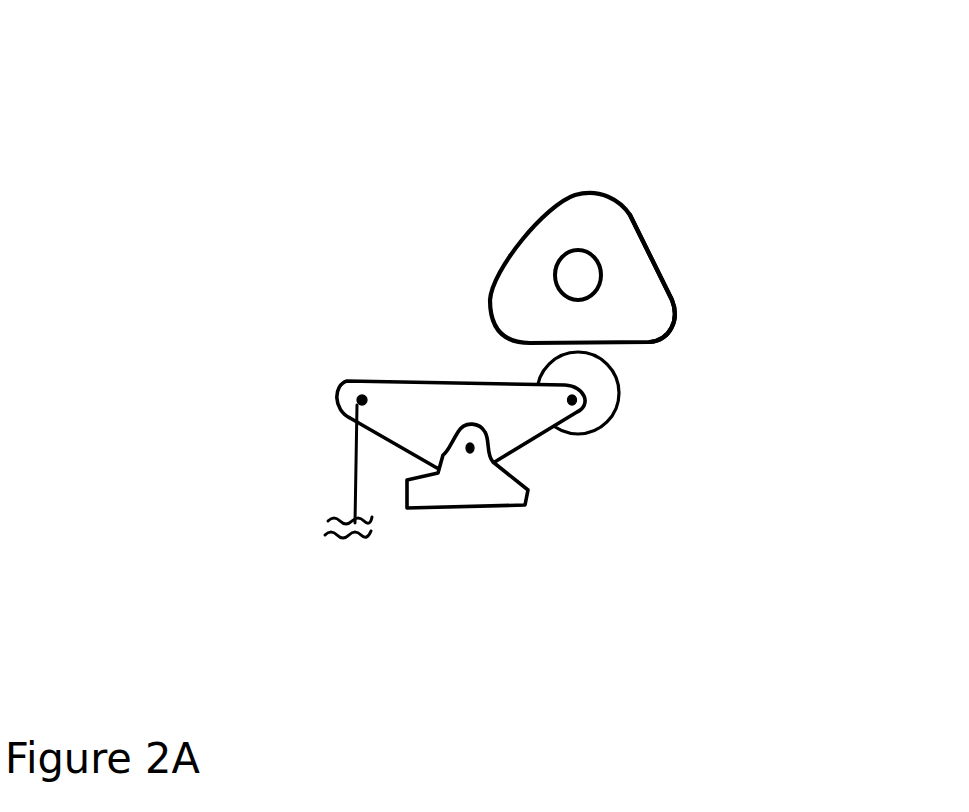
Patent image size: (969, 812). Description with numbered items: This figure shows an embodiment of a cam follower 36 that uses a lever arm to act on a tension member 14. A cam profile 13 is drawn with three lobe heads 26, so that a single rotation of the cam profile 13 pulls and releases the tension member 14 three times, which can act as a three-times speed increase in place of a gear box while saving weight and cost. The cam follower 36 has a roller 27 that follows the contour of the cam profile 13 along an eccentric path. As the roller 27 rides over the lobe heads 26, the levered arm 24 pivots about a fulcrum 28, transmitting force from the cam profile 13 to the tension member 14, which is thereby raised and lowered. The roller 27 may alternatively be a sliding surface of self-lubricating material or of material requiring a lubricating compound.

The cam follower 36 is at (282, 167).
The cam profile 13 is at (633, 217).
The lobe head 26 is at (675, 314).
The roller 27 is at (620, 413).
The levered arm 24 is at (495, 382).
The tension member 14 is at (355, 478).
The fulcrum 28 is at (493, 510).